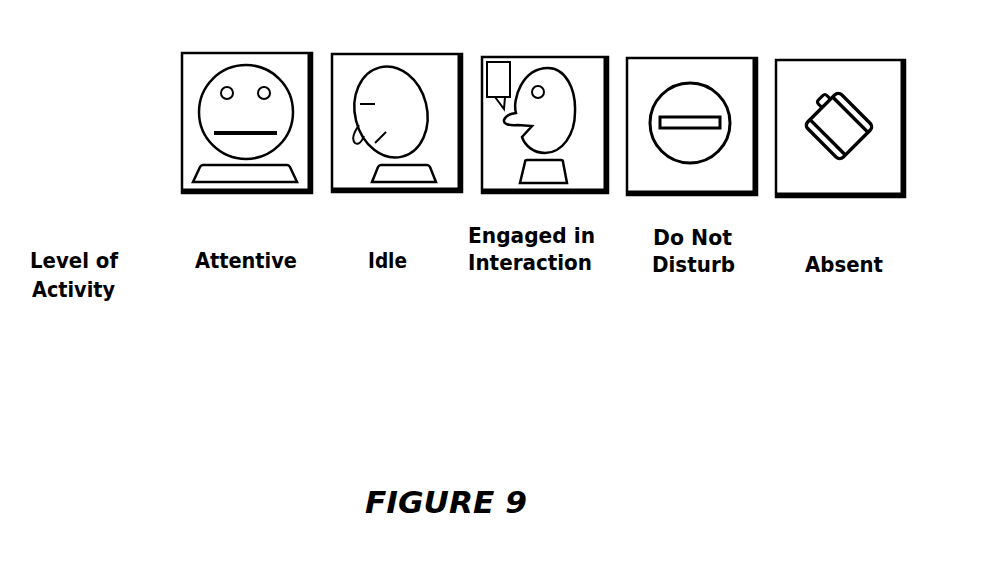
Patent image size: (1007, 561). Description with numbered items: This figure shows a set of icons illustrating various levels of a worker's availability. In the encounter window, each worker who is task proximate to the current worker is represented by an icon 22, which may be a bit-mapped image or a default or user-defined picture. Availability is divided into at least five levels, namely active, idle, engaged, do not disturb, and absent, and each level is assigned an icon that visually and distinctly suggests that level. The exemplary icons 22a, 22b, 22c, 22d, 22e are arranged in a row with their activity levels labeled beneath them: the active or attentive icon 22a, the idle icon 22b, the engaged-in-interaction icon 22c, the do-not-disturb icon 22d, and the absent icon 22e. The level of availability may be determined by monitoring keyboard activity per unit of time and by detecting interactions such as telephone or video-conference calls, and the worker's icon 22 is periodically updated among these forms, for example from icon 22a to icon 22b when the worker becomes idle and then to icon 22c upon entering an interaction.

The icon 22 is at (476, 111).
The active icon 22a is at (240, 53).
The idle icon 22b is at (365, 54).
The engaged icon 22c is at (515, 57).
The do not disturb icon 22d is at (663, 58).
The absent icon 22e is at (799, 60).